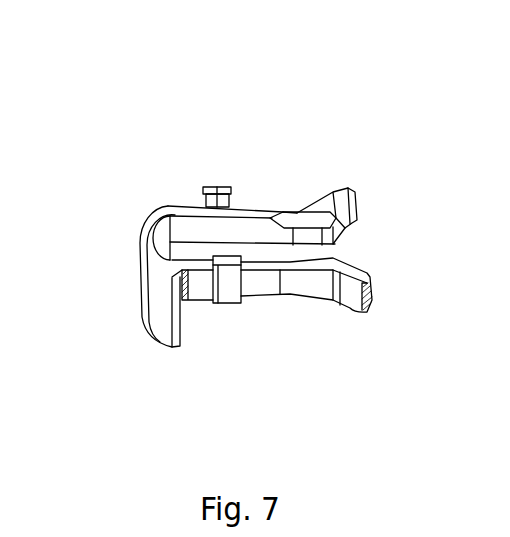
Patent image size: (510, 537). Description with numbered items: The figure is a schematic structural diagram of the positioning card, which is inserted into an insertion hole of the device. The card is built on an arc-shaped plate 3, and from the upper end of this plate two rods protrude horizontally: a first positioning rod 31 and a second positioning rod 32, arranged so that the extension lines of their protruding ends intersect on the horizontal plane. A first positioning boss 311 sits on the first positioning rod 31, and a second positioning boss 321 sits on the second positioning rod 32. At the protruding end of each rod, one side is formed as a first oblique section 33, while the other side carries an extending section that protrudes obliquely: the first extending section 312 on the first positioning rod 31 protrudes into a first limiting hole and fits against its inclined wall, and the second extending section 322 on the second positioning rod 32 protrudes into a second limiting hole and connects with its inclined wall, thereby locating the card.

The arc-shaped plate 3 is at (142, 243).
The first positioning rod 31 is at (248, 141).
The first positioning boss 311 is at (215, 185).
The first extending section 312 is at (342, 195).
The first oblique section 33 is at (300, 212).
The second positioning rod 32 is at (287, 362).
The second positioning boss 321 is at (231, 288).
The second extending section 322 is at (362, 300).